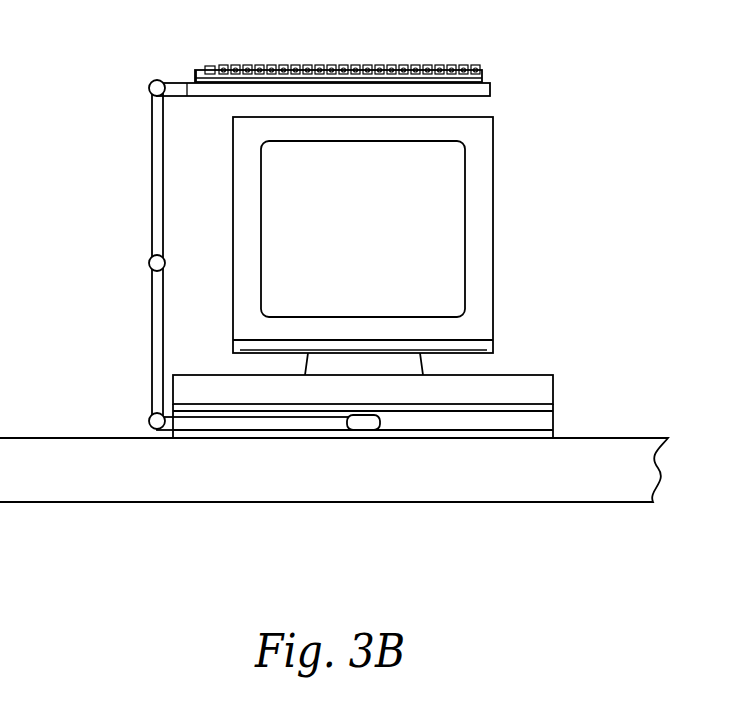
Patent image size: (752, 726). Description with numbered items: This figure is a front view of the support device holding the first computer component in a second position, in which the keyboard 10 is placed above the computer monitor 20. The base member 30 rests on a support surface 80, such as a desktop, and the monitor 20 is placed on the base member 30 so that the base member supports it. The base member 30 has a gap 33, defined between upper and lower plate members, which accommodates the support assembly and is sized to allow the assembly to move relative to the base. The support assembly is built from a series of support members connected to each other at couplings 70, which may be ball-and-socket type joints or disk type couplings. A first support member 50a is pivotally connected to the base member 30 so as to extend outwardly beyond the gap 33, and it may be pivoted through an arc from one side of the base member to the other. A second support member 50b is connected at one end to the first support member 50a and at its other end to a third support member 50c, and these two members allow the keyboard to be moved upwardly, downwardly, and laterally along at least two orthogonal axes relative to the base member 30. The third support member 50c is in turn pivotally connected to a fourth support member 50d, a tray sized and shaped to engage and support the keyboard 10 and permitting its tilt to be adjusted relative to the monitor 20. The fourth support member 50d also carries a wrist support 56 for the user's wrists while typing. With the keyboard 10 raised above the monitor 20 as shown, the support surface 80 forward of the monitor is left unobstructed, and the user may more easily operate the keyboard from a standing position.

The keyboard 10 is at (485, 70).
The wrist support 56 is at (196, 80).
The fourth support member 50d is at (490, 92).
The third support member 50c is at (152, 128).
The second support member 50b is at (152, 306).
The first support member 50a is at (216, 434).
The computer monitor 20 is at (494, 185).
The base member 30 is at (553, 405).
The gap 33 is at (545, 427).
The couplings 70 is at (170, 255).
The support surface 80 is at (640, 438).